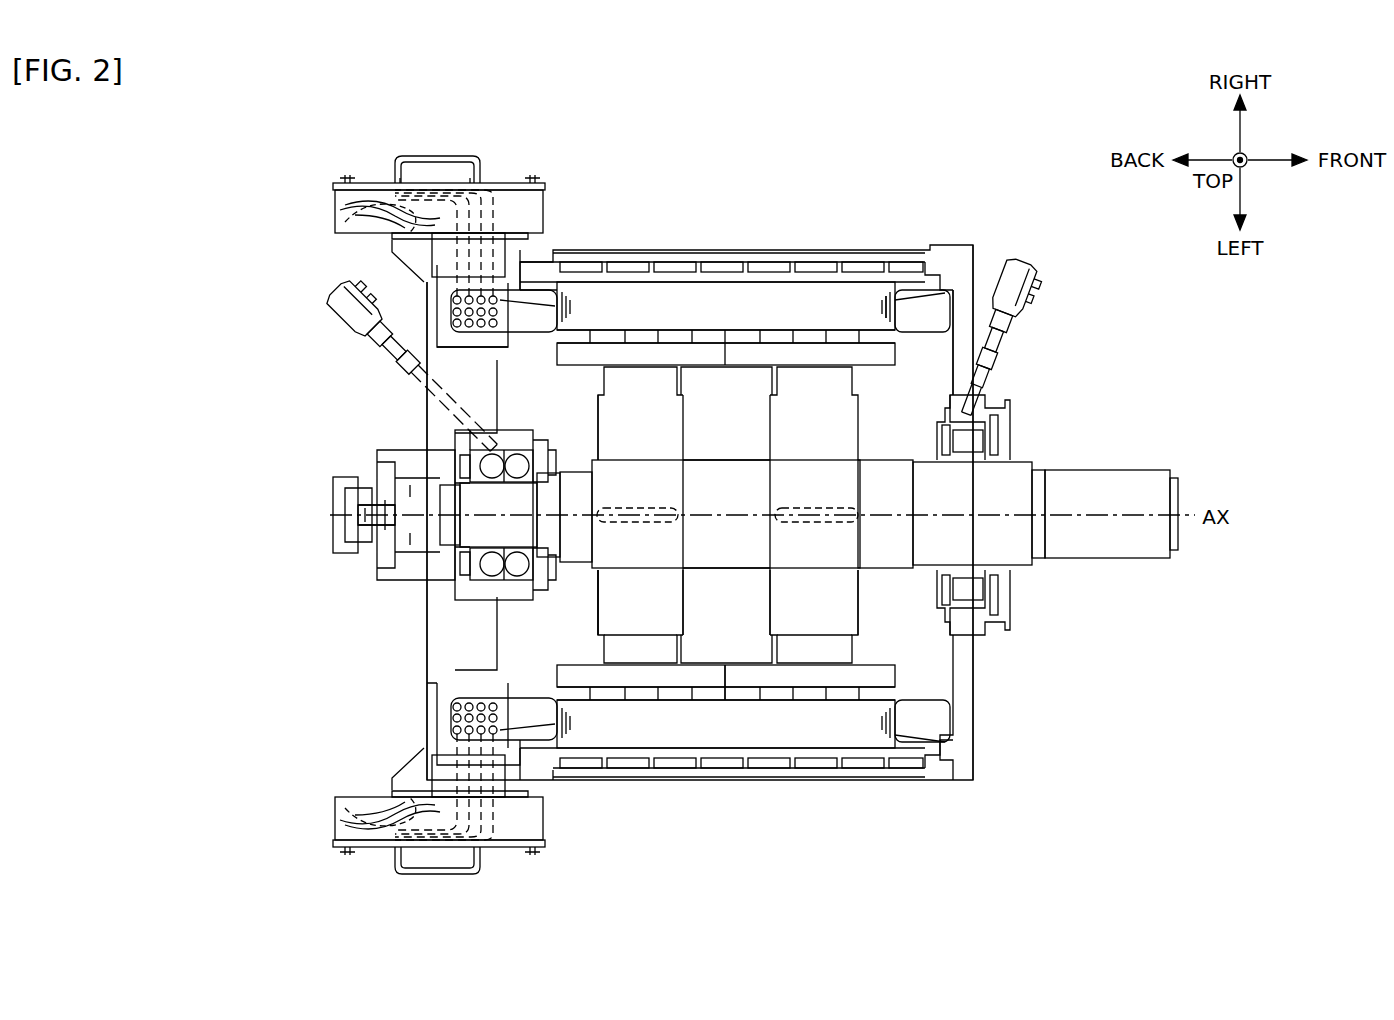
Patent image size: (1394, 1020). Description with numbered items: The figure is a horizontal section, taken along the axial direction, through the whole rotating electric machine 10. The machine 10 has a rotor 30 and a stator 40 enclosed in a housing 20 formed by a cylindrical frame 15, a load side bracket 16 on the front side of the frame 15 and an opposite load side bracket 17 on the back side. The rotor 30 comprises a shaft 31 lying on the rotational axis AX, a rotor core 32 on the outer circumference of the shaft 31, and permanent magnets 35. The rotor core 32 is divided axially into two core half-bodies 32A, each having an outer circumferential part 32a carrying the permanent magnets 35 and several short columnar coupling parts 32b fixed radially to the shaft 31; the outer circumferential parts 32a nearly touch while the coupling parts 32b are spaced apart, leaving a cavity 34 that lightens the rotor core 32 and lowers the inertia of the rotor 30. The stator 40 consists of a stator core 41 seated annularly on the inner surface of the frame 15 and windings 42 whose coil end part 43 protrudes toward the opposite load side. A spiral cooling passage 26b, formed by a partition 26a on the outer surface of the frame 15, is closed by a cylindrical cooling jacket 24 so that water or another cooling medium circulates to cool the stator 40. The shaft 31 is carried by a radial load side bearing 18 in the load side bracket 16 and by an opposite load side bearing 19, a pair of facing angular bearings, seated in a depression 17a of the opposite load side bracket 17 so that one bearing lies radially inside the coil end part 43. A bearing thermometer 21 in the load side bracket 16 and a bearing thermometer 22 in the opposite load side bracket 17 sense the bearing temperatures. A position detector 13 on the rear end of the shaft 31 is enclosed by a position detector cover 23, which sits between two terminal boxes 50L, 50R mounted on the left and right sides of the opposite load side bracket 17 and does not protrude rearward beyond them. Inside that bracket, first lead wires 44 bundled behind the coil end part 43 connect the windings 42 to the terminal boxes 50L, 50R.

The rotating electric machine 10 is at (976, 205).
The position detector 13 is at (348, 515).
The cylindrical frame 15 is at (668, 283).
The load side bracket 16 is at (963, 660).
The opposite load side bracket 17 is at (424, 683).
The depression 17a is at (497, 640).
The load side bearing 18 is at (975, 588).
The opposite load side bearing 19 is at (445, 568).
The housing 20 is at (705, 275).
The bearing thermometer 21 is at (995, 365).
The bearing thermometer 22 is at (420, 362).
The position detector cover 23 is at (360, 480).
The cooling jacket 24 is at (850, 270).
The partition 26a is at (588, 288).
The cooling passage 26b is at (632, 275).
The rotor 30 is at (790, 712).
The shaft 31 is at (1108, 488).
The rotor core 32 is at (900, 668).
The core half-body 32A is at (614, 685).
The outer circumferential part 32a is at (672, 675).
The coupling part 32b is at (835, 497).
The cavity 34 is at (732, 410).
The permanent magnet 35 is at (732, 690).
The stator 40 is at (766, 285).
The stator core 41 is at (810, 305).
The winding 42 is at (918, 302).
The coil end part 43 is at (530, 312).
The first lead wire 44 is at (490, 222).
The terminal box 50R is at (340, 205).
The terminal box 50L is at (340, 812).